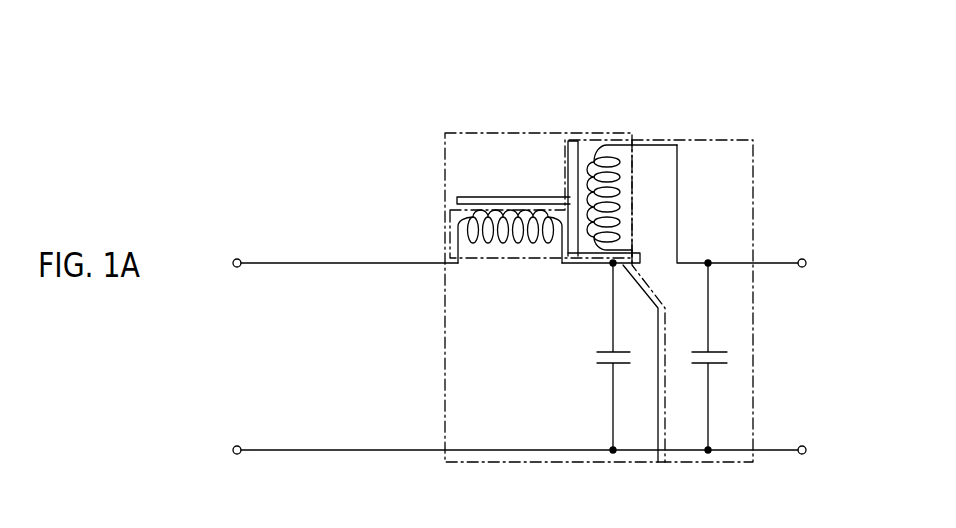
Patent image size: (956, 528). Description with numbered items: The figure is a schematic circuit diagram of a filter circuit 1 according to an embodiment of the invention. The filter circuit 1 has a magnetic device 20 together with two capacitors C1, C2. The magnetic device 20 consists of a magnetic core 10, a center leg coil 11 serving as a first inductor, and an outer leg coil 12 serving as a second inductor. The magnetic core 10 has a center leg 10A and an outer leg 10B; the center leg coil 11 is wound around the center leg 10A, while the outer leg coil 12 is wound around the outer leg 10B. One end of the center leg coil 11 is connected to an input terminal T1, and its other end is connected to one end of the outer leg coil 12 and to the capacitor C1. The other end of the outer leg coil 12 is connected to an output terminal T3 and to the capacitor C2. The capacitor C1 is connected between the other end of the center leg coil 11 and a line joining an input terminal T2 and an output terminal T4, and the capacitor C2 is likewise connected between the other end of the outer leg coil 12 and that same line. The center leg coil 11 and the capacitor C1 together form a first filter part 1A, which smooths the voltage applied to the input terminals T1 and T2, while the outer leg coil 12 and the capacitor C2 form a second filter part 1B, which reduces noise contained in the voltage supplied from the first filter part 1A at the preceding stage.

The filter circuit 1 is at (770, 52).
The magnetic core 10 is at (575, 68).
The center leg 10A is at (480, 191).
The outer leg 10B is at (565, 163).
The center leg coil 11 is at (458, 237).
The outer leg coil 12 is at (630, 190).
The magnetic device 20 is at (617, 134).
The first filter part 1A is at (445, 358).
The second filter part 1B is at (755, 360).
The capacitor C1 is at (622, 365).
The capacitor C2 is at (718, 365).
The input terminal T1 is at (237, 267).
The input terminal T2 is at (237, 454).
The output terminal T3 is at (802, 267).
The output terminal T4 is at (802, 454).